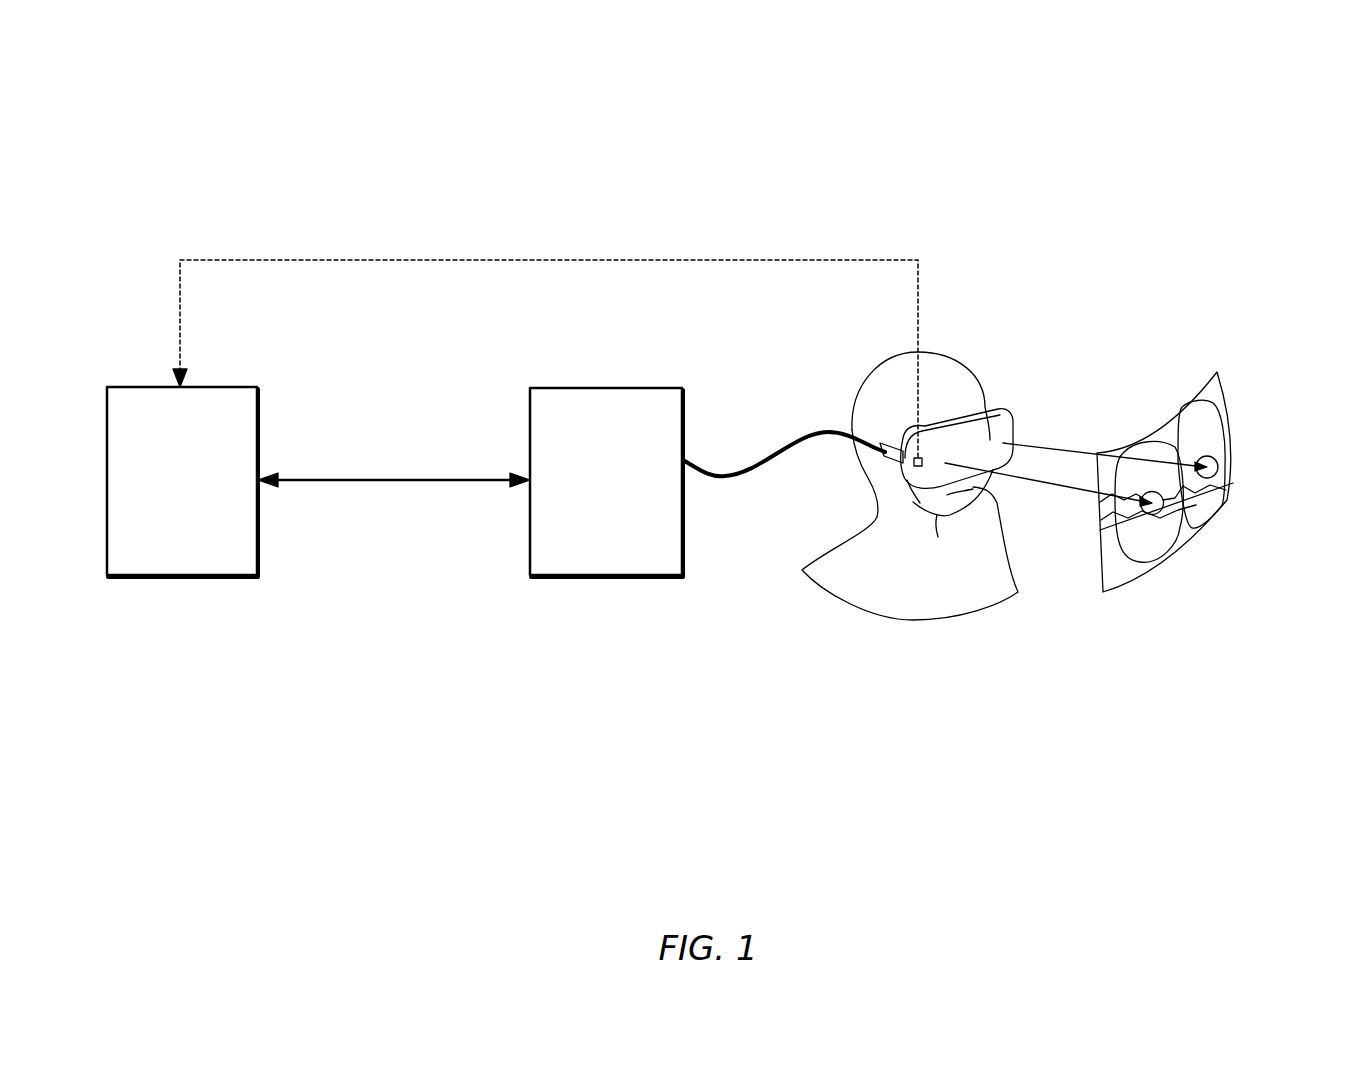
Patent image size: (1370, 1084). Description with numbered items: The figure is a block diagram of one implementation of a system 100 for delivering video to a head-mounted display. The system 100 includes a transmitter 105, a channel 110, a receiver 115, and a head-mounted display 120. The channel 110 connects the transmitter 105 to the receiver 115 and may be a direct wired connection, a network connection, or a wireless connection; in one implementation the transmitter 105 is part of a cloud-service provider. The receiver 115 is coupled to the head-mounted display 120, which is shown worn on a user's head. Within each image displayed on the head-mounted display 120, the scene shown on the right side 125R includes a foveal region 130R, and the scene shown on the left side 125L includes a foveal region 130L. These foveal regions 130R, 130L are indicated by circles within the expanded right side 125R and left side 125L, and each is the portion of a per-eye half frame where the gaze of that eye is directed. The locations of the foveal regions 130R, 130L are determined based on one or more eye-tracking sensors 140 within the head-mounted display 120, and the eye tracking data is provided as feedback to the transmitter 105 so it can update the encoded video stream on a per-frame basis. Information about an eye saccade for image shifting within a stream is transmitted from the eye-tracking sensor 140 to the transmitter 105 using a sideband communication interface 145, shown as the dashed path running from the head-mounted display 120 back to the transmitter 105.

The system 100 is at (1272, 86).
The transmitter 105 is at (163, 502).
The channel 110 is at (395, 479).
The receiver 115 is at (586, 502).
The head-mounted display 120 is at (993, 410).
The left side 125L is at (1200, 402).
The right side 125R is at (1146, 441).
The foveal region 130L is at (1233, 487).
The foveal region 130R is at (1160, 511).
The eye-tracking sensor 140 is at (903, 472).
The sideband communication interface 145 is at (524, 260).